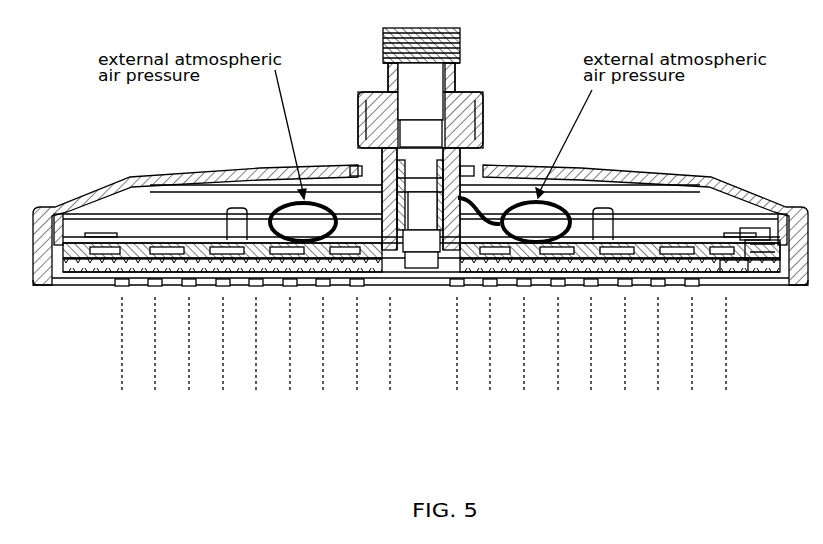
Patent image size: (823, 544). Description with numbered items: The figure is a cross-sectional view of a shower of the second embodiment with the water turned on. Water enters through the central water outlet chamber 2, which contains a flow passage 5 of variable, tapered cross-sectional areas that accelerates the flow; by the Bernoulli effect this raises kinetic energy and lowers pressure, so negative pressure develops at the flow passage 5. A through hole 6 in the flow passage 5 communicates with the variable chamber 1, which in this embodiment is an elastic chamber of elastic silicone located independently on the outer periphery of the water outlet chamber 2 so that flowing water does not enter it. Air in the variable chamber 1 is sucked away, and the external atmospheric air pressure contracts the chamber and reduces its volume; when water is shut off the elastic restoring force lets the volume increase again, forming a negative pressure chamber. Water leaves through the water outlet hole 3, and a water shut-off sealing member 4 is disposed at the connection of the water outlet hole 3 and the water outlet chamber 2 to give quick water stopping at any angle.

The variable chamber 1 is at (300, 201).
The water outlet chamber 2 is at (478, 140).
The water outlet hole 3 is at (740, 267).
The water shut-off sealing member 4 is at (757, 240).
The flow passage 5 is at (358, 103).
The through hole 6 is at (471, 172).